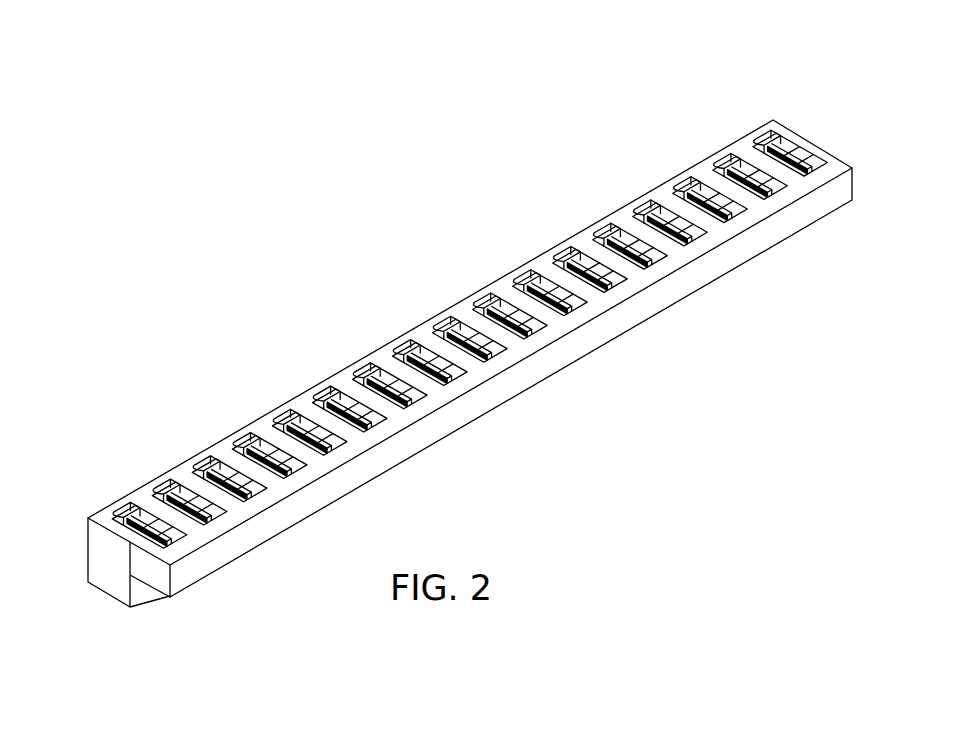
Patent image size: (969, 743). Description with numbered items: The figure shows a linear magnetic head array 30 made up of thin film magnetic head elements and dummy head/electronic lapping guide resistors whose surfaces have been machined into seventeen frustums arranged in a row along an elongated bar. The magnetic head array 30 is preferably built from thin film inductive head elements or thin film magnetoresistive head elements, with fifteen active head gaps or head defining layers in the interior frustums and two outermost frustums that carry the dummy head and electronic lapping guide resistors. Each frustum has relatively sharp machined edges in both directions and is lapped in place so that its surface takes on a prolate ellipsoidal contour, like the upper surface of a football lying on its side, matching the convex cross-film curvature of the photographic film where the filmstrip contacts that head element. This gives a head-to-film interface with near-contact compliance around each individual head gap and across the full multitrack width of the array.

The linear magnetic head array 30 is at (569, 124).